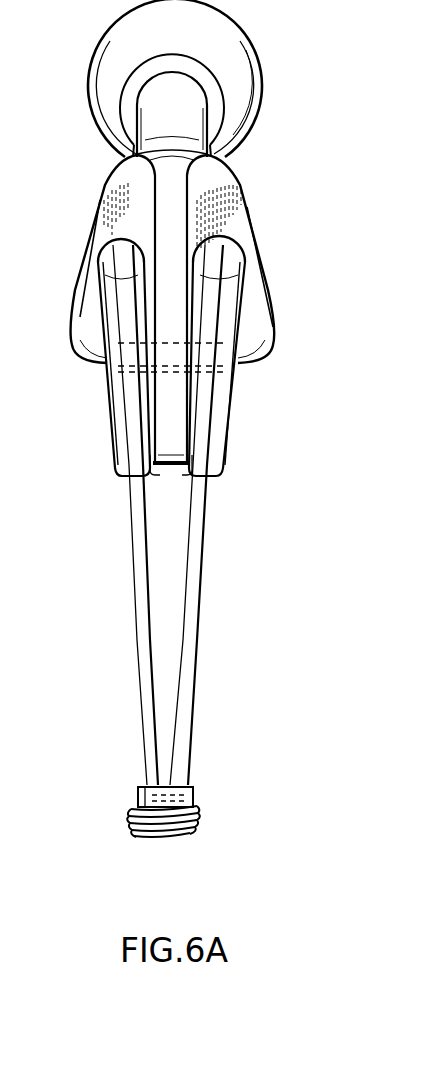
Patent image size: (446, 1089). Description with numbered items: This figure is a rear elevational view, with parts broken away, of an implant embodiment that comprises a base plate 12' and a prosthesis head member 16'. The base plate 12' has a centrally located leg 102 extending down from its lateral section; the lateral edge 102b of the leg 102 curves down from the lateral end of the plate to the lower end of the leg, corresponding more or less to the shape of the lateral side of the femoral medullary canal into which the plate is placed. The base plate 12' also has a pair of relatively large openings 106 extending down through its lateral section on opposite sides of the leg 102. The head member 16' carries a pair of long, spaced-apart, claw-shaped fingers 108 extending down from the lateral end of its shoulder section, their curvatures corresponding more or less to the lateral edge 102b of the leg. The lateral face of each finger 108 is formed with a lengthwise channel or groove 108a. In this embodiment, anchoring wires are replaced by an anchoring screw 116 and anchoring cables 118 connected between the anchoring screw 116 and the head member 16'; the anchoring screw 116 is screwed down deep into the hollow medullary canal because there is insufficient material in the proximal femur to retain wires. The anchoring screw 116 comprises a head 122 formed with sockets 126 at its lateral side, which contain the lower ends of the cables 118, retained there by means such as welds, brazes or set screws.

The head member 16' is at (210, 78).
The base plate 12' is at (206, 263).
The leg 102 is at (165, 181).
The lateral edge 102b is at (175, 427).
The openings 106 is at (148, 260).
The fingers 108 is at (240, 320).
The groove 108a is at (122, 405).
The anchoring cables 118 is at (138, 541).
The head 122 is at (193, 801).
The sockets 126 is at (150, 787).
The anchoring screw 116 is at (104, 814).